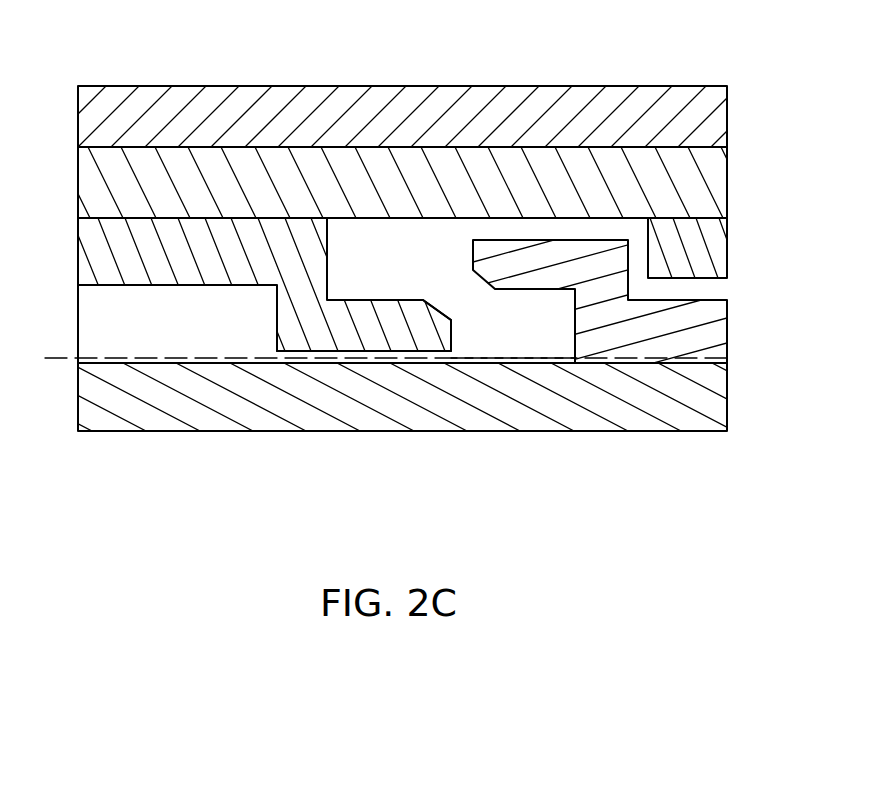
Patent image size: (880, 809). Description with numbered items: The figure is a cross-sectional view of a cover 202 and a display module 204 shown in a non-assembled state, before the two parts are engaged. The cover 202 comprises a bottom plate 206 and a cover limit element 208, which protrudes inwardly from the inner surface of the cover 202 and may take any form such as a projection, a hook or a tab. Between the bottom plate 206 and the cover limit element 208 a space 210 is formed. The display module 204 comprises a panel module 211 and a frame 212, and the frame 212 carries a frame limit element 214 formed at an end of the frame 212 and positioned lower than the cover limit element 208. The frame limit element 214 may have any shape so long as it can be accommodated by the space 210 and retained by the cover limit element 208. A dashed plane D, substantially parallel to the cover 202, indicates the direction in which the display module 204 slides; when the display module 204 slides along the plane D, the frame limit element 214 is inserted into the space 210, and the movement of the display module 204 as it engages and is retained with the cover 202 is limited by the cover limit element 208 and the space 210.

The cover 202 is at (735, 300).
The display module 204 is at (73, 87).
The bottom plate 206 is at (660, 400).
The cover limit element 208 is at (520, 262).
The space 210 is at (535, 347).
The panel module 211 is at (735, 86).
The frame 212 is at (113, 270).
The frame limit element 214 is at (372, 343).
The plane D is at (63, 357).